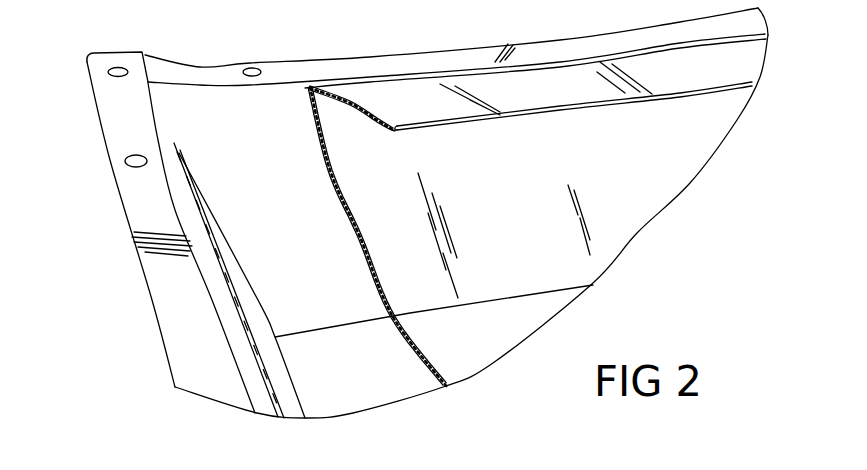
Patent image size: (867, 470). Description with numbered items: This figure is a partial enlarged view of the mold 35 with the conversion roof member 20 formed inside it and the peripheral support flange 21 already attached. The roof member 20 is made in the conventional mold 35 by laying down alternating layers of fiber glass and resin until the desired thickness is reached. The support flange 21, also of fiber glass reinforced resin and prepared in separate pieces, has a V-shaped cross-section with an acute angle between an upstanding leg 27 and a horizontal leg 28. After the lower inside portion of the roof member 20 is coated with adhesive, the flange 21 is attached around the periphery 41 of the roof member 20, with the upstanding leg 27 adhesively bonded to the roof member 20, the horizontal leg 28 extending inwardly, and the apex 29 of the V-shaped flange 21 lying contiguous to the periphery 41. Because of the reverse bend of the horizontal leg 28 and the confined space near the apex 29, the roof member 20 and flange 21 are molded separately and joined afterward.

The conversion roof member 20 is at (690, 170).
The peripheral support flange 21 is at (360, 97).
The upstanding leg 27 is at (330, 117).
The horizontal leg 28 is at (552, 100).
The apex 29 is at (309, 93).
The mold 35 is at (210, 72).
The periphery 41 is at (423, 72).